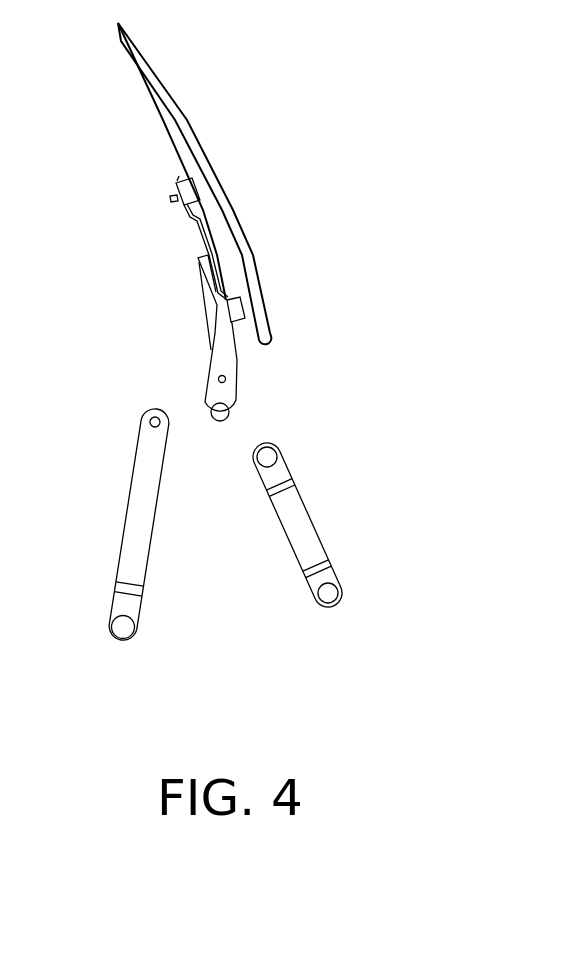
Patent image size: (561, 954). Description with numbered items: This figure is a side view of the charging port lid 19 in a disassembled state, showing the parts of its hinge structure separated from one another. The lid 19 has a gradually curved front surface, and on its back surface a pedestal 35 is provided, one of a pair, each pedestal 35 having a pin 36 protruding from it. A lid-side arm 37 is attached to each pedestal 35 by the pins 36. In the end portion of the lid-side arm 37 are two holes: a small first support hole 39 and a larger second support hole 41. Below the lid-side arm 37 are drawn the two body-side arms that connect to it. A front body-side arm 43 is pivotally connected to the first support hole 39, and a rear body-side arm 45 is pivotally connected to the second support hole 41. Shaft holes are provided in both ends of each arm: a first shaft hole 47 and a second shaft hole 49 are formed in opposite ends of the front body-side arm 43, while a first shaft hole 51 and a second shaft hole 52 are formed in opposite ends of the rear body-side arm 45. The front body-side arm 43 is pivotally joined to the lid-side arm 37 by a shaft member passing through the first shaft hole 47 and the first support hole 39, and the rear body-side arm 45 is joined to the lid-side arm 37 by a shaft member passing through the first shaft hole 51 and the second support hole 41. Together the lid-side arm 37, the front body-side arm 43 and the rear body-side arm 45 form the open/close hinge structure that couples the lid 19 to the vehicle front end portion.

The lid 19 is at (167, 82).
The pedestal 35 is at (192, 188).
The pin 36 is at (170, 199).
The lid-side arm 37 is at (200, 285).
The first support hole 39 is at (226, 378).
The second support hole 41 is at (221, 411).
The front body-side arm 43 is at (121, 507).
The first shaft hole 47 is at (155, 422).
The second shaft hole 49 is at (121, 628).
The rear body-side arm 45 is at (314, 510).
The first shaft hole 51 is at (269, 454).
The second shaft hole 52 is at (330, 592).